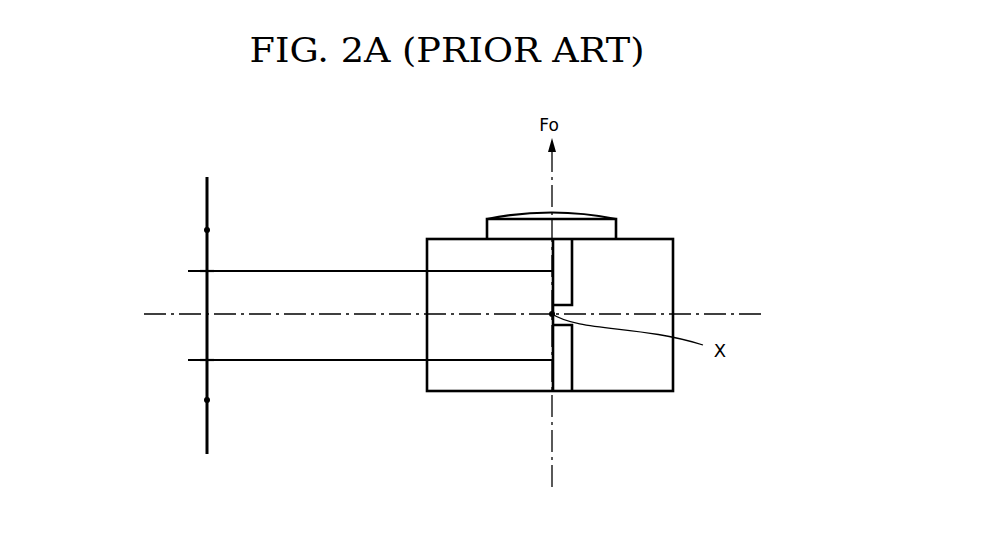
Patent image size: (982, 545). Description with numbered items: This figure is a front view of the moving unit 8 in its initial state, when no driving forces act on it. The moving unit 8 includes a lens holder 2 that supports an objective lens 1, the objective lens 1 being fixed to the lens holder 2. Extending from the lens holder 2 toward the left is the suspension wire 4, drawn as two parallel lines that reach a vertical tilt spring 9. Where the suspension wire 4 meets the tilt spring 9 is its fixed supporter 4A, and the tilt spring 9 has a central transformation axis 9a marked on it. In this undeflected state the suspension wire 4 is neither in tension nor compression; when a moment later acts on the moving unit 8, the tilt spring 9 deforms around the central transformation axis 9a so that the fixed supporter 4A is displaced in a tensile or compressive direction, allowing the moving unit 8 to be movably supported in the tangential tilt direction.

The objective lens 1 is at (580, 219).
The lens holder 2 is at (645, 241).
The suspension wire 4 is at (345, 270).
The fixed supporter 4A is at (206, 270).
The moving unit 8 is at (716, 196).
The tilt spring 9 is at (190, 200).
The central transformation axis 9a is at (208, 229).